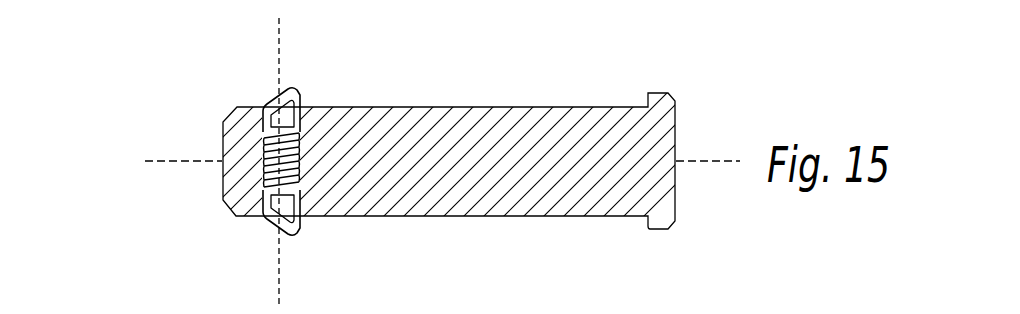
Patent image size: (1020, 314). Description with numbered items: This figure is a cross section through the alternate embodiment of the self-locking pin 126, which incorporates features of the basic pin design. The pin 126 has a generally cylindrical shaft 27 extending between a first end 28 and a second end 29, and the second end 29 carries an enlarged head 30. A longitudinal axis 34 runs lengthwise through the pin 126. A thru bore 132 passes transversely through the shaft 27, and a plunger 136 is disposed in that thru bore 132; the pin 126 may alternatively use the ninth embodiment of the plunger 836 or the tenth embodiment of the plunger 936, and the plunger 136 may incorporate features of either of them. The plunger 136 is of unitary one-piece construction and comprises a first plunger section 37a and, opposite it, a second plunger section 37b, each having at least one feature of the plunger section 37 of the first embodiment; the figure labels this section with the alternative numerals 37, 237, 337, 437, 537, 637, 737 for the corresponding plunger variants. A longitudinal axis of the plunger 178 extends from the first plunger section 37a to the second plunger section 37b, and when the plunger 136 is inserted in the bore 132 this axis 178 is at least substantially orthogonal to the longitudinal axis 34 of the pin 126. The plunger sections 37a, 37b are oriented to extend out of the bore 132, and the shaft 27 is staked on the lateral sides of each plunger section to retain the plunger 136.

The shaft 27 is at (482, 218).
The first end 28 is at (221, 178).
The second end 29 is at (641, 217).
The enlarged head 30 is at (677, 138).
The longitudinal axis of the pin 34 is at (160, 164).
The plunger section 37 is at (268, 101).
The retention clip 237 is at (239, 172).
The retention clip 337 is at (239, 172).
The retention clip 437 is at (239, 172).
The retention clip 537 is at (239, 172).
The retention clip 637 is at (239, 172).
The retention clip 737 is at (239, 172).
The first plunger section 37a is at (272, 96).
The second plunger section 37b is at (273, 224).
The self-locking pin 126 is at (482, 73).
The thru bore 132 is at (258, 222).
The plunger 136 is at (284, 90).
The plunger 836 is at (281, 161).
The plunger 936 is at (281, 161).
The longitudinal axis of the plunger 178 is at (277, 34).